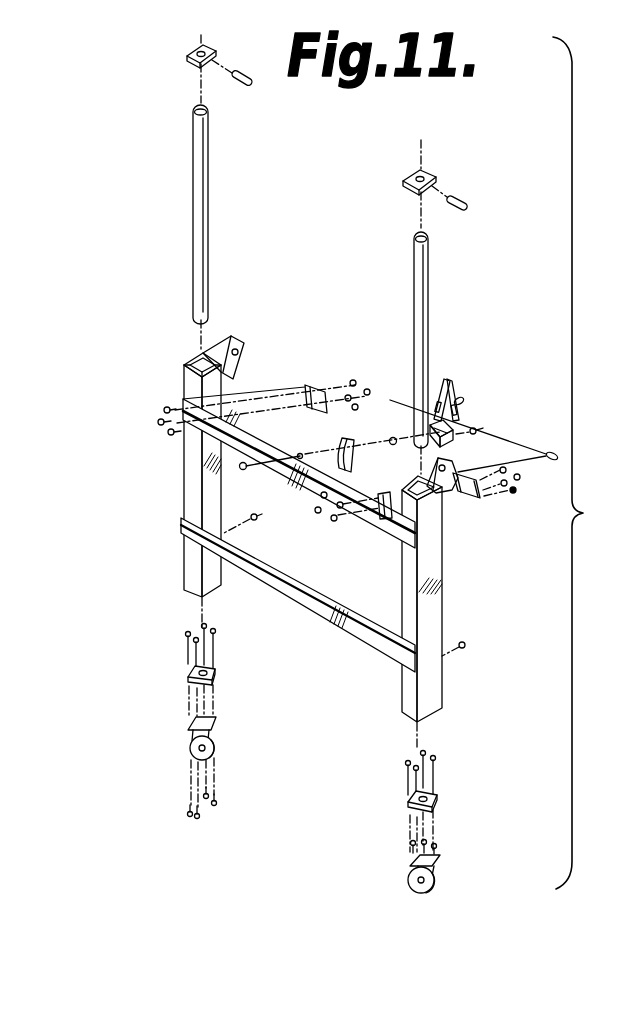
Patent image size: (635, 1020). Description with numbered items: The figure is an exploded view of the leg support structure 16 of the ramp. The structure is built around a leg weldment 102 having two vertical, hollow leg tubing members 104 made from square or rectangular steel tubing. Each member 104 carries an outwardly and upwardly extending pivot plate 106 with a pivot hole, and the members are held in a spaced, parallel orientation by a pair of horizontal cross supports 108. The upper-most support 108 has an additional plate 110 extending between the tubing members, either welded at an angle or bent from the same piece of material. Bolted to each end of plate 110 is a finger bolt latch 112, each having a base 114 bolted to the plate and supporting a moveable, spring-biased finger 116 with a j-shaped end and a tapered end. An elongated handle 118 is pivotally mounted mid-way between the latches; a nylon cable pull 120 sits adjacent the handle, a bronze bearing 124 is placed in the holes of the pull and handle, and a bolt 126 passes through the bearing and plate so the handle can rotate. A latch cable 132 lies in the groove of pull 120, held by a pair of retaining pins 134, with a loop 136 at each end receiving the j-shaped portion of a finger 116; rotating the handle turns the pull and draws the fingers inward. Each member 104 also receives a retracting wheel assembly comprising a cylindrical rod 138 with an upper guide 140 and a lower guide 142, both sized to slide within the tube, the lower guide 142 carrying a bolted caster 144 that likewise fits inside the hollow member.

The leg support structure 16 is at (586, 463).
The leg weldment 102 is at (446, 596).
The leg tubing member 104 is at (184, 484).
The pivot plate 106 is at (231, 342).
The horizontal cross support 108 is at (393, 530).
The plate 110 is at (250, 434).
The finger bolt latch 112 is at (307, 384).
The base 114 is at (314, 403).
The finger 116 is at (340, 410).
The handle 118 is at (353, 458).
The cable pull 120 is at (448, 441).
The bronze bearing 124 is at (393, 437).
The bolt 126 is at (480, 425).
The latch cable 132 is at (506, 427).
The retaining pin 134 is at (453, 387).
The loop 136 is at (463, 398).
The cylindrical rod 138 is at (209, 229).
The upper guide 140 is at (212, 51).
The lower guide 142 is at (218, 678).
The caster 144 is at (218, 740).